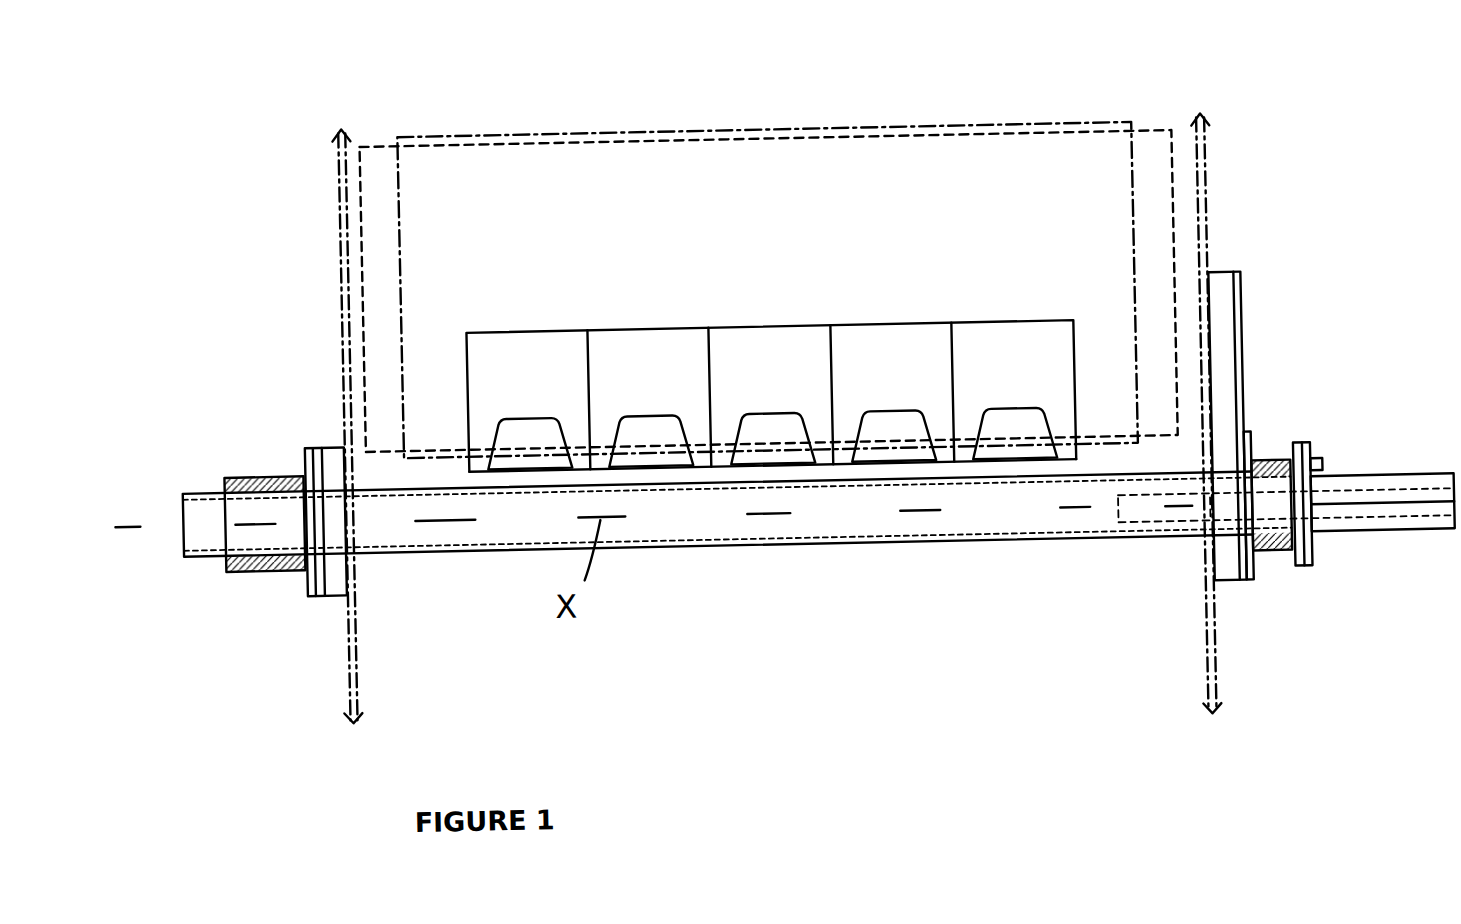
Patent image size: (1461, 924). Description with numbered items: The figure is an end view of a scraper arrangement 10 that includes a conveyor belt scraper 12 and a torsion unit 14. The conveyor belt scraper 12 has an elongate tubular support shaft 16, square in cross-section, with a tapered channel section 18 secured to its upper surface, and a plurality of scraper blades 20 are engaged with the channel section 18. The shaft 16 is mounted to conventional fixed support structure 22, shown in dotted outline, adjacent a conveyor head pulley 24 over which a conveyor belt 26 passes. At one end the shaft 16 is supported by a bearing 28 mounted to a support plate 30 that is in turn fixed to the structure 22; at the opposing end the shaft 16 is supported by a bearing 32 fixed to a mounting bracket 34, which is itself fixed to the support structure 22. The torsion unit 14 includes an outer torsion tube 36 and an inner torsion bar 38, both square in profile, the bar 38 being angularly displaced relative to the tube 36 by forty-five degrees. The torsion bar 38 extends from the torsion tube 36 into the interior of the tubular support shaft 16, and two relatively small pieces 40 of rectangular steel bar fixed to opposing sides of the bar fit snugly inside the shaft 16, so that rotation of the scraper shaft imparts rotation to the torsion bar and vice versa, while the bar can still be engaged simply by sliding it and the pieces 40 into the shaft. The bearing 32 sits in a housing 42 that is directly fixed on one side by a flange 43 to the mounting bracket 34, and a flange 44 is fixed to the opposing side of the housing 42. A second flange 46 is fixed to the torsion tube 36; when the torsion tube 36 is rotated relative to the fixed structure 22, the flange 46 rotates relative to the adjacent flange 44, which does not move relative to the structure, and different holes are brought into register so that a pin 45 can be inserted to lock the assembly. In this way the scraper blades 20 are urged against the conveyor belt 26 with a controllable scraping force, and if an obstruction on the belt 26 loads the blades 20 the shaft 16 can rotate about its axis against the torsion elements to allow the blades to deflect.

The scraper arrangement 10 is at (1010, 92).
The conveyor belt scraper 12 is at (854, 590).
The torsion unit 14 is at (1285, 610).
The tubular support shaft 16 is at (969, 554).
The tapered channel section 18 is at (1076, 480).
The scraper blades 20 is at (1009, 331).
The fixed support structure 22 is at (355, 645).
The conveyor head pulley 24 is at (1160, 142).
The conveyor belt 26 is at (843, 136).
The bearing 28 is at (259, 469).
The support plate 30 is at (319, 437).
The bearing 32 is at (1263, 446).
The mounting bracket 34 is at (1253, 364).
The outer torsion tube 36 is at (1367, 544).
The inner torsion bar 38 is at (1404, 533).
The pieces of rectangular steel bar 40 is at (1171, 550).
The bearing housing 42 is at (1276, 565).
The flange 43 is at (1256, 597).
The flange 44 is at (1292, 565).
The pin 45 is at (1324, 480).
The second flange 46 is at (1309, 453).